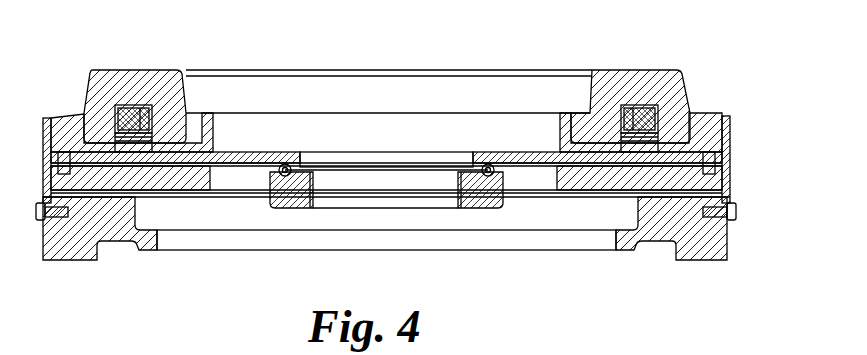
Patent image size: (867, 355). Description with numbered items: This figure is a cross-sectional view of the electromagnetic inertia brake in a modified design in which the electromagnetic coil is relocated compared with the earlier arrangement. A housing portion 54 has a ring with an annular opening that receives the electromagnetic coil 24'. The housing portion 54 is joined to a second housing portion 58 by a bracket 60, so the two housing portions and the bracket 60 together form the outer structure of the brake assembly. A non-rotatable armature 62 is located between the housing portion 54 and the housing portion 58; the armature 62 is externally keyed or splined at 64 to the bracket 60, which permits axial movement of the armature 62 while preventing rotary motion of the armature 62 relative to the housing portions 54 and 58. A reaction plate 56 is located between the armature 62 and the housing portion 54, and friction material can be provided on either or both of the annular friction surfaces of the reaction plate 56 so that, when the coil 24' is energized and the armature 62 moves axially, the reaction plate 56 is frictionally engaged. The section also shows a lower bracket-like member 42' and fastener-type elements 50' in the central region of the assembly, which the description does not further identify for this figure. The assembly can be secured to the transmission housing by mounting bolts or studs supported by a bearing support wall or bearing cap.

The housing portion 54 is at (645, 88).
The electromagnetic coil 24' is at (434, 102).
The bracket 60 is at (730, 143).
The external key or spline 64 is at (727, 165).
The reaction plate 56 is at (541, 157).
The armature 62 is at (703, 182).
The bracket 42' is at (386, 146).
The rivet 50' is at (411, 130).
The housing portion 58 is at (718, 238).